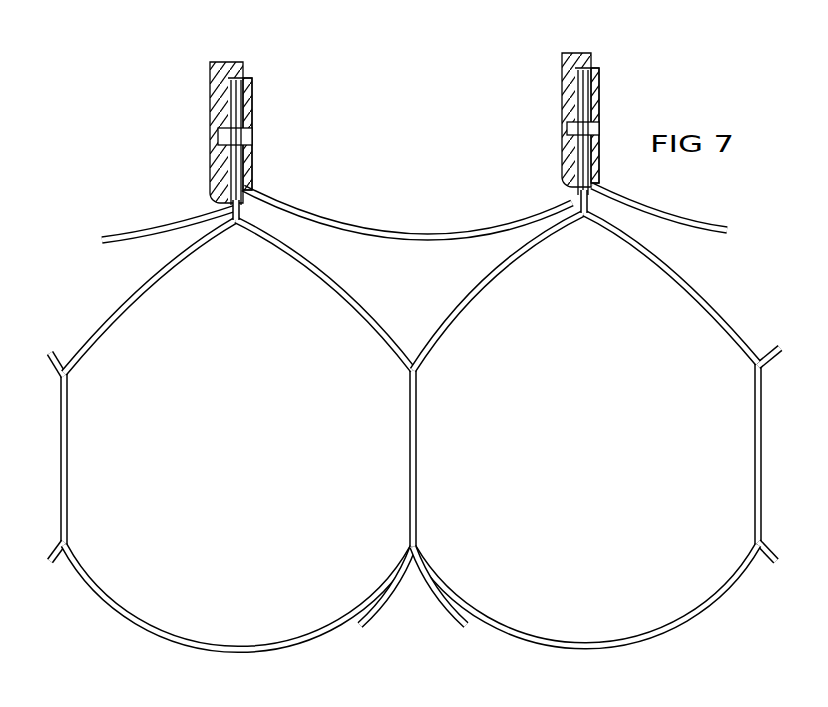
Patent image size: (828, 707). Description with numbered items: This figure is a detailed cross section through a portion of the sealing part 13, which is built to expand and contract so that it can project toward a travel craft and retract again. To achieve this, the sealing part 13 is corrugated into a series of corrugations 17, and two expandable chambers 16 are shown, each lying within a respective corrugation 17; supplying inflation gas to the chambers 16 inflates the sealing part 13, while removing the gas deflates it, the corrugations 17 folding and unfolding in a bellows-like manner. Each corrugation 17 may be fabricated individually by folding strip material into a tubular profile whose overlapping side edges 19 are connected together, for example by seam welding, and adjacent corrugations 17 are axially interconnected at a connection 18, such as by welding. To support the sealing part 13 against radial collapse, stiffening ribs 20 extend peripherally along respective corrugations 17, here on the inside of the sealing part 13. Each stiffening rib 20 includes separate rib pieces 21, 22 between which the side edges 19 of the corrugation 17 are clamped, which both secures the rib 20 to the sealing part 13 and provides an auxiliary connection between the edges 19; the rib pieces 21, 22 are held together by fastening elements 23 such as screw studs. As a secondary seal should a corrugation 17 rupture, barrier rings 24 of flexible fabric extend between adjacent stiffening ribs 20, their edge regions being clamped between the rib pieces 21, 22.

The sealing part 13 is at (415, 430).
The expandable chambers 16 is at (473, 585).
The corrugations 17 is at (147, 630).
The connection 18 is at (67, 419).
The side edges 19 is at (244, 108).
The stiffening ribs 20 is at (402, 113).
The rib piece 21 is at (214, 78).
The rib piece 22 is at (246, 90).
The fastening elements 23 is at (237, 135).
The barrier rings 24 is at (353, 221).